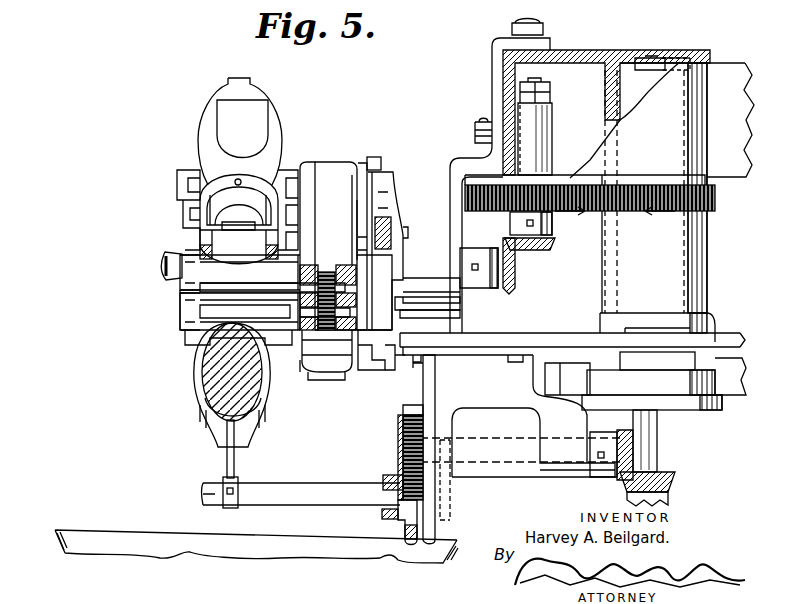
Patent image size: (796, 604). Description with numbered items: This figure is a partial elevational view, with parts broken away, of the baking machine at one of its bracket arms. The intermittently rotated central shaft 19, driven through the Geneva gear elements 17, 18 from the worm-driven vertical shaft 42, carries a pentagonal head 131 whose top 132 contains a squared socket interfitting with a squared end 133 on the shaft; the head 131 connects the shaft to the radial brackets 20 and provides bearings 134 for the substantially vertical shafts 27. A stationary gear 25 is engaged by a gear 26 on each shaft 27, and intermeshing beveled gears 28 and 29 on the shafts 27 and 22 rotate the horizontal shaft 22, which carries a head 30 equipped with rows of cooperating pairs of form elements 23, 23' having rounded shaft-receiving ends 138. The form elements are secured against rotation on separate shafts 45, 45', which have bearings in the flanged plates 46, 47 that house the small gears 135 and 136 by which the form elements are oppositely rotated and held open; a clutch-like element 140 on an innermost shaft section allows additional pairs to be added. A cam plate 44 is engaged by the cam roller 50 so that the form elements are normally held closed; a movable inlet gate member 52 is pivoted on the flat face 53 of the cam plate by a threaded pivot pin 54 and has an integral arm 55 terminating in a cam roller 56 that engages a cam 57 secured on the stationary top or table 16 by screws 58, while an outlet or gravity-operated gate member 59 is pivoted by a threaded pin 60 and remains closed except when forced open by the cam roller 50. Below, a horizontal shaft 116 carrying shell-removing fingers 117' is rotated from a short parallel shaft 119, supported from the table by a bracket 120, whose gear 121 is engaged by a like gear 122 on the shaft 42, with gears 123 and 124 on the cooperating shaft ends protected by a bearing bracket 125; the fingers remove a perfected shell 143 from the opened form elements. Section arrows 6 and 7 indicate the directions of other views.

The section line 6- 6 is at (62, 264).
The section line 7- 7 is at (360, 162).
The top or table 16 is at (503, 340).
The Geneva gear element 17 is at (710, 402).
The Geneva gear element 18 is at (556, 378).
The shaft 19 is at (632, 84).
The radial bracket 20 is at (497, 72).
The horizontal shaft 22 is at (178, 268).
The form element 23 is at (200, 385).
The form element 23' is at (204, 171).
The stationary gear 25 is at (683, 207).
The gear 26 is at (560, 202).
The vertical shaft 27 is at (520, 213).
The beveled gear 28 is at (548, 248).
The beveled gear 29 is at (515, 291).
The head 30 is at (170, 172).
The vertical shaft 42 is at (655, 452).
The cam plate 44 is at (383, 175).
The shaft 45 is at (309, 377).
The shaft 45' is at (272, 284).
The plate 46 is at (332, 172).
The plate 47 is at (303, 163).
The cam roller 50 is at (372, 368).
The inlet gate member 52 is at (385, 205).
The flat face 53 is at (396, 360).
The threaded pivot pin or screw 54 is at (405, 230).
The integral arm 55 is at (405, 275).
The cam roller 56 is at (412, 300).
The cam 57 is at (412, 312).
The screw 58 is at (435, 336).
The outlet or gravity-operated gate member 59 is at (375, 265).
The threaded pin or screw 60 is at (366, 228).
The horizontal shaft 116 is at (262, 490).
The shell-removing finger 117' is at (259, 464).
The short parallel shaft 119 is at (112, 548).
The bracket 120 is at (490, 392).
The gear 121 is at (620, 472).
The gear 122 is at (662, 485).
The gear 123 is at (385, 515).
The gear 124 is at (396, 450).
The bearing bracket 125 is at (395, 478).
The pentagonal head 131 is at (578, 60).
The top 132 is at (668, 56).
The squared end 133 is at (650, 62).
The bearing 134 is at (538, 136).
The small gear 135 is at (312, 332).
The small gear 136 is at (337, 240).
The rounded shaft-receiving end 138 is at (200, 312).
The clutch-like element 140 is at (290, 311).
The shell 143 is at (248, 382).